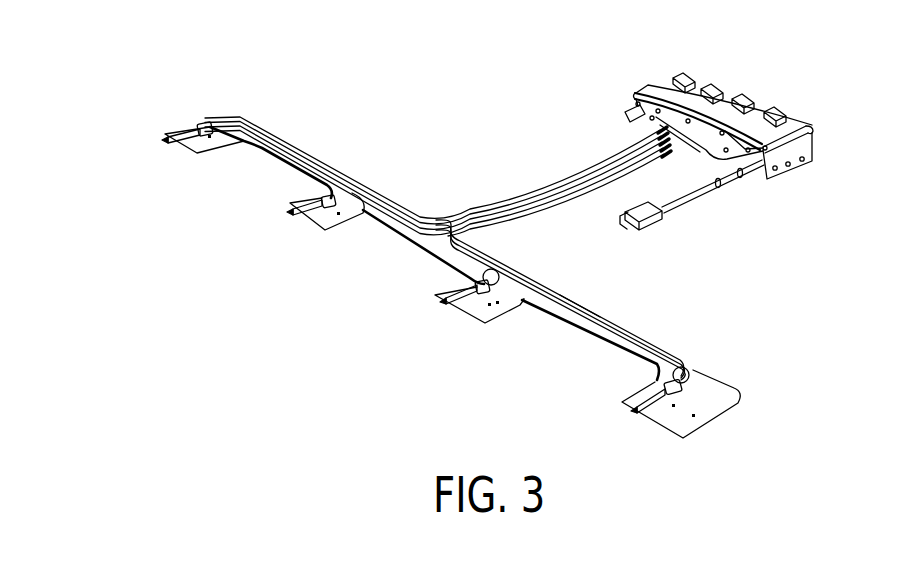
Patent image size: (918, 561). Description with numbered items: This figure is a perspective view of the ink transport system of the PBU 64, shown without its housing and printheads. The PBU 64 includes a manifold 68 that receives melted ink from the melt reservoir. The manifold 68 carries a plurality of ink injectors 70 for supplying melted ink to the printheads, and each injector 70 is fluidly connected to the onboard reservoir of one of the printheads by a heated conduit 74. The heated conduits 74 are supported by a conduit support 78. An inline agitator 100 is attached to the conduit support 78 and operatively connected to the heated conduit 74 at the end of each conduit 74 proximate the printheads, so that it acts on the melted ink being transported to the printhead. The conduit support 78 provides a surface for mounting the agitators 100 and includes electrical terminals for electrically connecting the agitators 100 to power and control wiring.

The PBU 64 is at (441, 95).
The manifold 68 is at (633, 102).
The ink injectors 70 is at (777, 111).
The heated conduit 74 is at (607, 326).
The conduit support 78 is at (614, 268).
The inline agitator 100 is at (679, 384).